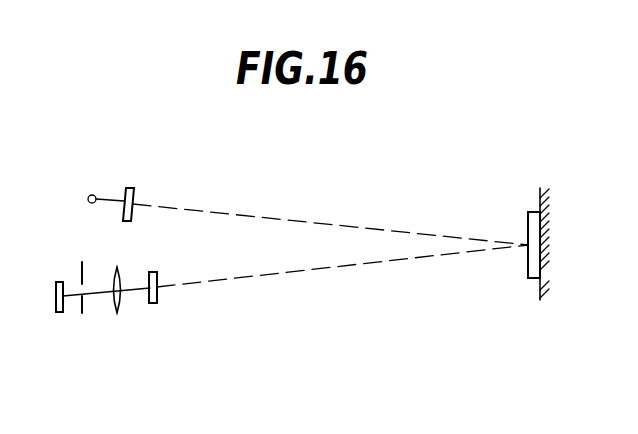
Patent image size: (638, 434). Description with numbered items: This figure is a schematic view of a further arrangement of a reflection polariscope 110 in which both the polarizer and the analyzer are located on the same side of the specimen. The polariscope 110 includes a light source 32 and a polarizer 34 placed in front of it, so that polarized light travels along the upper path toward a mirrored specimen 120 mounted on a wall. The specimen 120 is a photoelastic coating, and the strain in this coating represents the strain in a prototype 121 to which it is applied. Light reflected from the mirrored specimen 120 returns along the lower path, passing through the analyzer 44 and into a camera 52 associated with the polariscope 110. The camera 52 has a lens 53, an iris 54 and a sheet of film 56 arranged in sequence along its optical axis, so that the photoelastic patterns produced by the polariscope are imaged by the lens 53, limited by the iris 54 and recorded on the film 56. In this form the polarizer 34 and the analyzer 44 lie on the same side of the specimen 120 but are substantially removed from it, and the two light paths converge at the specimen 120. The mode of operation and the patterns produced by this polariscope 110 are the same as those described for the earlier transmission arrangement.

The polariscope 110 is at (353, 186).
The light source 32 is at (92, 194).
The polarizer 34 is at (133, 193).
The camera 52 is at (88, 347).
The sheet of film 56 is at (57, 313).
The iris 54 is at (84, 308).
The lens 53 is at (121, 310).
The analyzer 44 is at (158, 276).
The specimen 120 is at (528, 212).
The prototype 121 is at (547, 273).